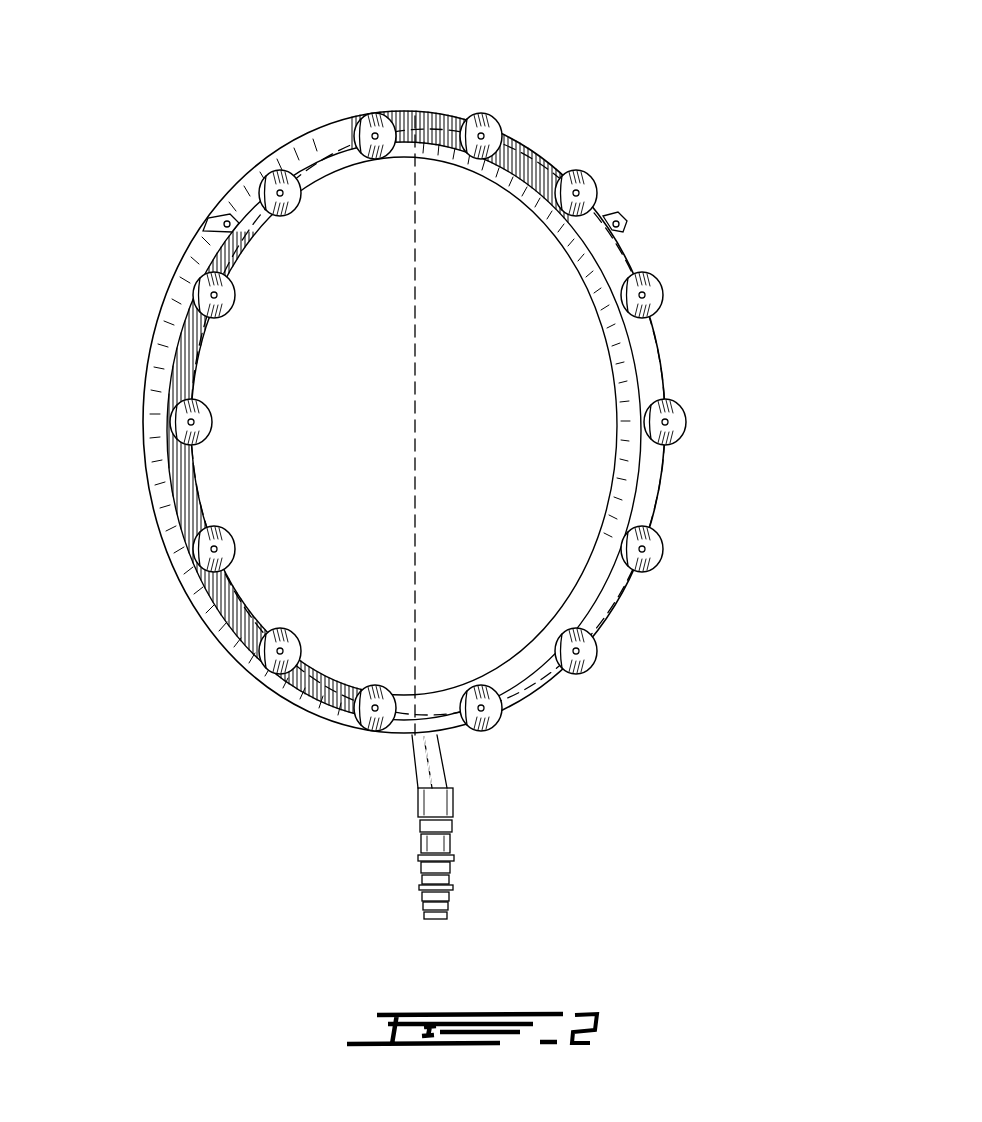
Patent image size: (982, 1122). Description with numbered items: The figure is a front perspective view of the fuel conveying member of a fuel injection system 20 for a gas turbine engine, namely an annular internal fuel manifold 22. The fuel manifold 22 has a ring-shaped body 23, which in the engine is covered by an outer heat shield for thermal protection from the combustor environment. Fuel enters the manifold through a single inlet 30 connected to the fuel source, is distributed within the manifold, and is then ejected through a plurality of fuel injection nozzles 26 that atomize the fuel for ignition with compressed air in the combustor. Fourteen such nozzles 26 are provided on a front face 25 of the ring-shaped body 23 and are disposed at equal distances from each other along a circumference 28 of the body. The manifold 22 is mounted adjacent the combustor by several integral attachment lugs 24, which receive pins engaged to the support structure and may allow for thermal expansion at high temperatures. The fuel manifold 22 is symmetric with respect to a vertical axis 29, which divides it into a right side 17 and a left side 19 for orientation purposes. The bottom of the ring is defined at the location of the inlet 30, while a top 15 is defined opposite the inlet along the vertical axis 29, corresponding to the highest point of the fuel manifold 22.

The top 15 is at (410, 121).
The right side 17 is at (616, 612).
The left side 19 is at (246, 668).
The fuel injection system 20 is at (433, 477).
The fuel manifold 22 is at (668, 333).
The ring-shaped body 23 is at (660, 477).
The attachment lugs 24 is at (206, 222).
The front face 25 is at (183, 378).
The fuel injection nozzles 26 is at (690, 402).
The circumference 28 is at (546, 676).
The axis 29 is at (414, 440).
The inlet 30 is at (458, 856).